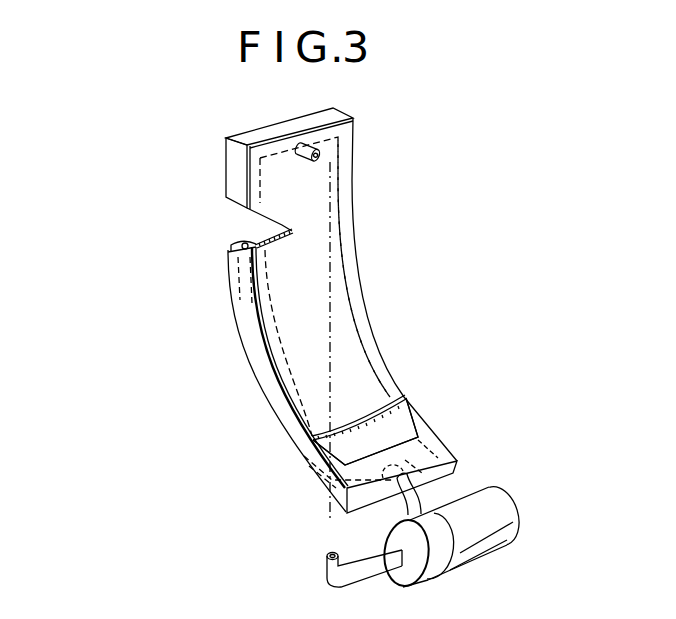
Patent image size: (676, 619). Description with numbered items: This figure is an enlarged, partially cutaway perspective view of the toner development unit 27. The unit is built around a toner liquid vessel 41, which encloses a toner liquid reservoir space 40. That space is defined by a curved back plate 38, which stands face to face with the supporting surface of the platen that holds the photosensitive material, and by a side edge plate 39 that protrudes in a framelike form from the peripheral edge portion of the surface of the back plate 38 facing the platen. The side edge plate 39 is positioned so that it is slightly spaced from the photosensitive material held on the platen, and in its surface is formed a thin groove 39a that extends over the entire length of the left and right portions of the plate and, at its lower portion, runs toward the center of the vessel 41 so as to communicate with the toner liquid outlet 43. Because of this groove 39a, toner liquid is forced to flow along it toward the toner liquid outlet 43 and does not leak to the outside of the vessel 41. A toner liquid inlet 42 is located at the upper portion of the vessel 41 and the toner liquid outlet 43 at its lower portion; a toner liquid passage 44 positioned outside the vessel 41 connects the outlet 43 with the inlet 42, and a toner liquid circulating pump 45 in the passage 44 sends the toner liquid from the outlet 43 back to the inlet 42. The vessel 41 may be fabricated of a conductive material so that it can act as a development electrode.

The toner development unit 27 is at (441, 288).
The curved back plate 38 is at (283, 306).
The side edge plate 39 is at (258, 368).
The thin groove 39a is at (240, 244).
The toner liquid reservoir space 40 is at (389, 456).
The toner liquid vessel 41 is at (361, 247).
The toner liquid inlet 42 is at (311, 146).
The toner liquid outlet 43 is at (423, 495).
The toner liquid passage 44 is at (333, 190).
The toner liquid circulating pump 45 is at (490, 555).